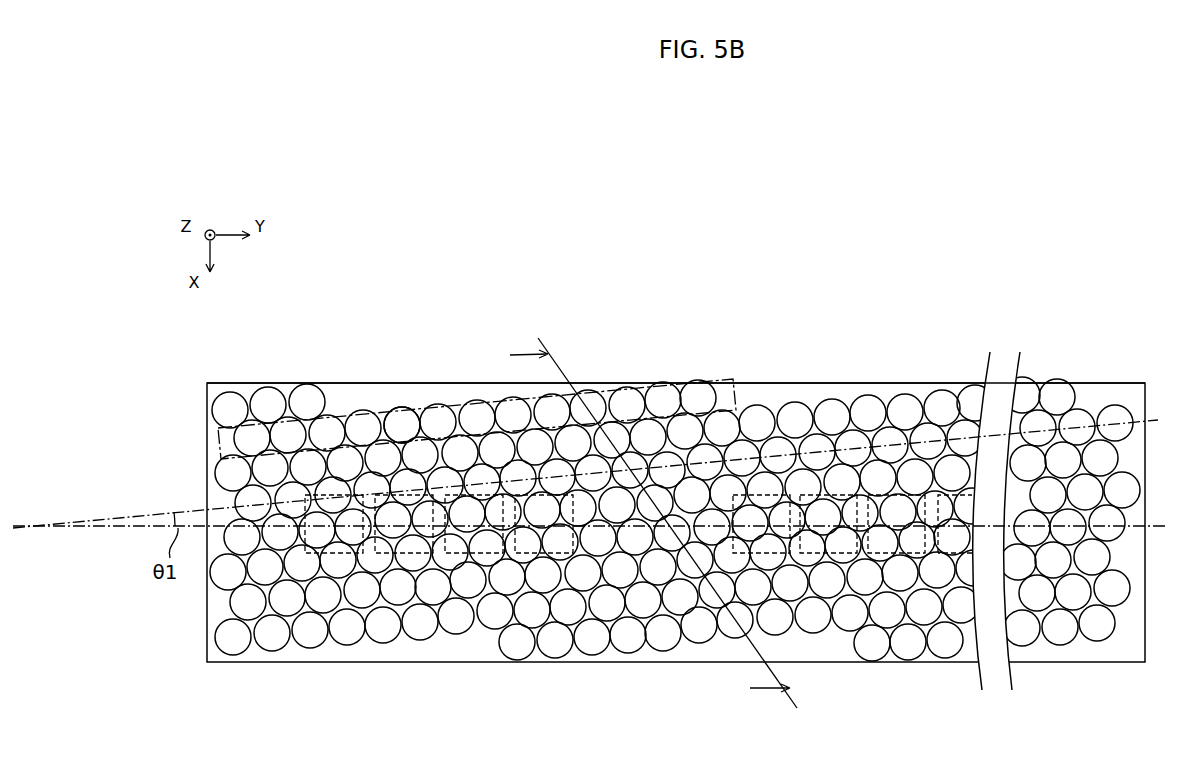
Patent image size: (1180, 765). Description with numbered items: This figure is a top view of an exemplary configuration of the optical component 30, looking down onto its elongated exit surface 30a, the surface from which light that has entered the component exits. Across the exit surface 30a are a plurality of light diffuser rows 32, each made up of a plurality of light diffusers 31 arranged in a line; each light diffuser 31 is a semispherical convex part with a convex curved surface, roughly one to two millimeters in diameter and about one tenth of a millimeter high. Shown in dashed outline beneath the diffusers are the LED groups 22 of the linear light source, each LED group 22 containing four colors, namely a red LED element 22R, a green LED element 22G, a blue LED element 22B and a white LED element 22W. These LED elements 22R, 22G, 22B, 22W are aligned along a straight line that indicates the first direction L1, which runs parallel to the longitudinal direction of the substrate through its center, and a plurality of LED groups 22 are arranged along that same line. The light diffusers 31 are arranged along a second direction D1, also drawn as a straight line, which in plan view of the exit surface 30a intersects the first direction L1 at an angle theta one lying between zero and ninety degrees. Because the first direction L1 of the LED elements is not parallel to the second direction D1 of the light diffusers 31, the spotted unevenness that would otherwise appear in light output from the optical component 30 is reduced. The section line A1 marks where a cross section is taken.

The optical component 30 is at (911, 263).
The exit surface 30a is at (771, 405).
The light diffuser 31 is at (400, 412).
The light diffuser row 32 is at (339, 410).
The LED group 22 is at (617, 630).
The red LED element 22R is at (334, 555).
The green LED element 22G is at (418, 555).
The blue LED element 22B is at (484, 555).
The white LED element 22W is at (544, 611).
The first direction L1 is at (132, 532).
The second direction D1 is at (133, 517).
The cross-section line A1 is at (653, 508).